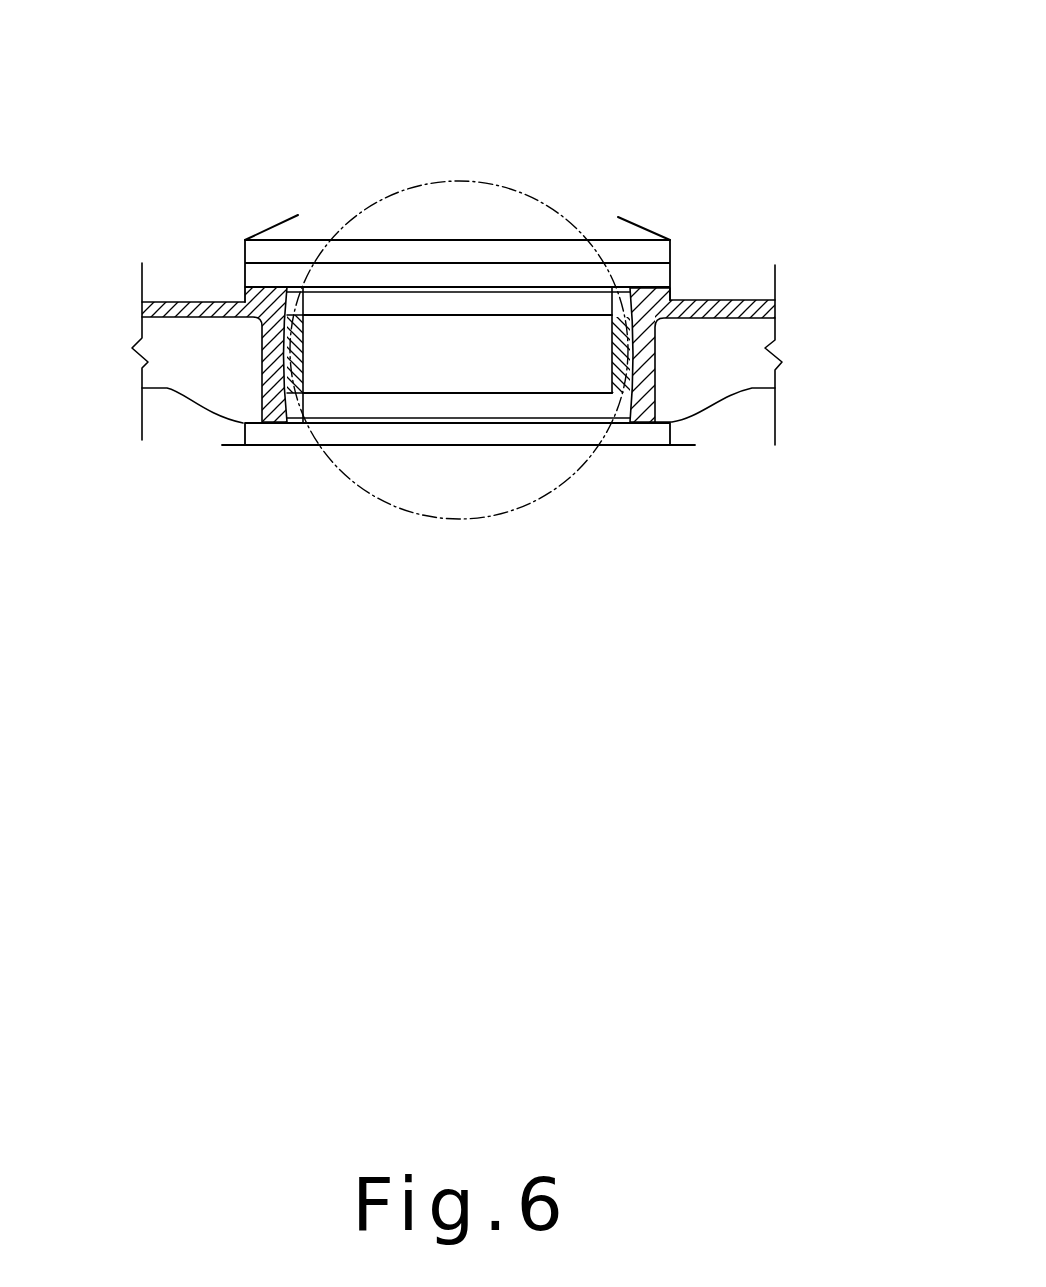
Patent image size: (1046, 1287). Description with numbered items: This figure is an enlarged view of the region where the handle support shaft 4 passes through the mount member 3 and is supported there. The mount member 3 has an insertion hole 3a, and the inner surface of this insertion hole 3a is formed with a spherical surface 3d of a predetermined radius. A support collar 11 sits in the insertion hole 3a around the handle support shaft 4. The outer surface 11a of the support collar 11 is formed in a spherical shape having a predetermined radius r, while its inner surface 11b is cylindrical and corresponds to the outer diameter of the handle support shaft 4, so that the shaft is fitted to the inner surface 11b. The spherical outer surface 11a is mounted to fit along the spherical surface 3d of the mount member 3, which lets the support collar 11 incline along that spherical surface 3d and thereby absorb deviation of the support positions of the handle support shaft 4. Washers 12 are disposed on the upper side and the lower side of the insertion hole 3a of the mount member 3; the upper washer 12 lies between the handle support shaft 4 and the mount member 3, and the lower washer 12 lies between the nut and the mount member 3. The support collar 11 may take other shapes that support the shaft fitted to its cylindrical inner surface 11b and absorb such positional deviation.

The mount member 3 is at (708, 300).
The insertion hole 3a is at (573, 398).
The spherical surface 3d is at (635, 352).
The handle support shaft 4 is at (634, 253).
The support collar 11 is at (505, 378).
The outer surface 11a is at (303, 353).
The inner surface 11b is at (423, 352).
The washer 12 is at (273, 272).
The radius r is at (458, 345).